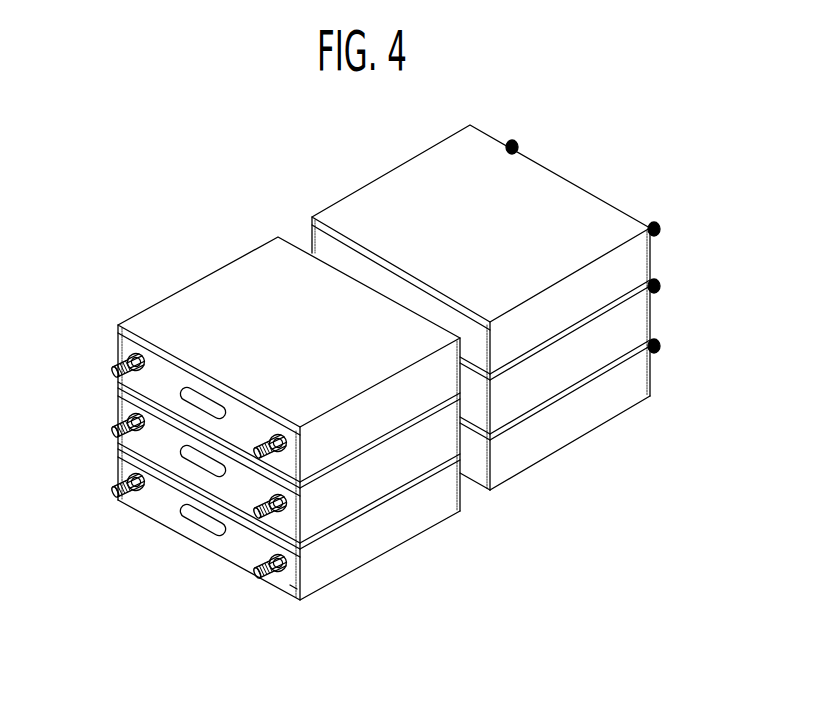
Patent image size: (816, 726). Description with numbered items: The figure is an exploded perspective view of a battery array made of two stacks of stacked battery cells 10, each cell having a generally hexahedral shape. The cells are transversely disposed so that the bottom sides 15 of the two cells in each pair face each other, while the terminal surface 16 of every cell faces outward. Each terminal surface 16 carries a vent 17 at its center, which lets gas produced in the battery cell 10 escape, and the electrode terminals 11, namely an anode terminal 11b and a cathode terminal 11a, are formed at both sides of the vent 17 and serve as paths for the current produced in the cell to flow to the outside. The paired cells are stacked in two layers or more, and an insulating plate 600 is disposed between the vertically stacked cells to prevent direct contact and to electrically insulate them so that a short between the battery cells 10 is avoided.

The battery cell 10 is at (383, 375).
The electrode terminal 11 is at (733, 162).
The cathode terminal 11a is at (114, 497).
The anode terminal 11b is at (257, 576).
The bottom side 15 is at (462, 494).
The terminal surface 16 is at (292, 578).
The vent 17 is at (200, 403).
The insulating plate 600 is at (130, 391).